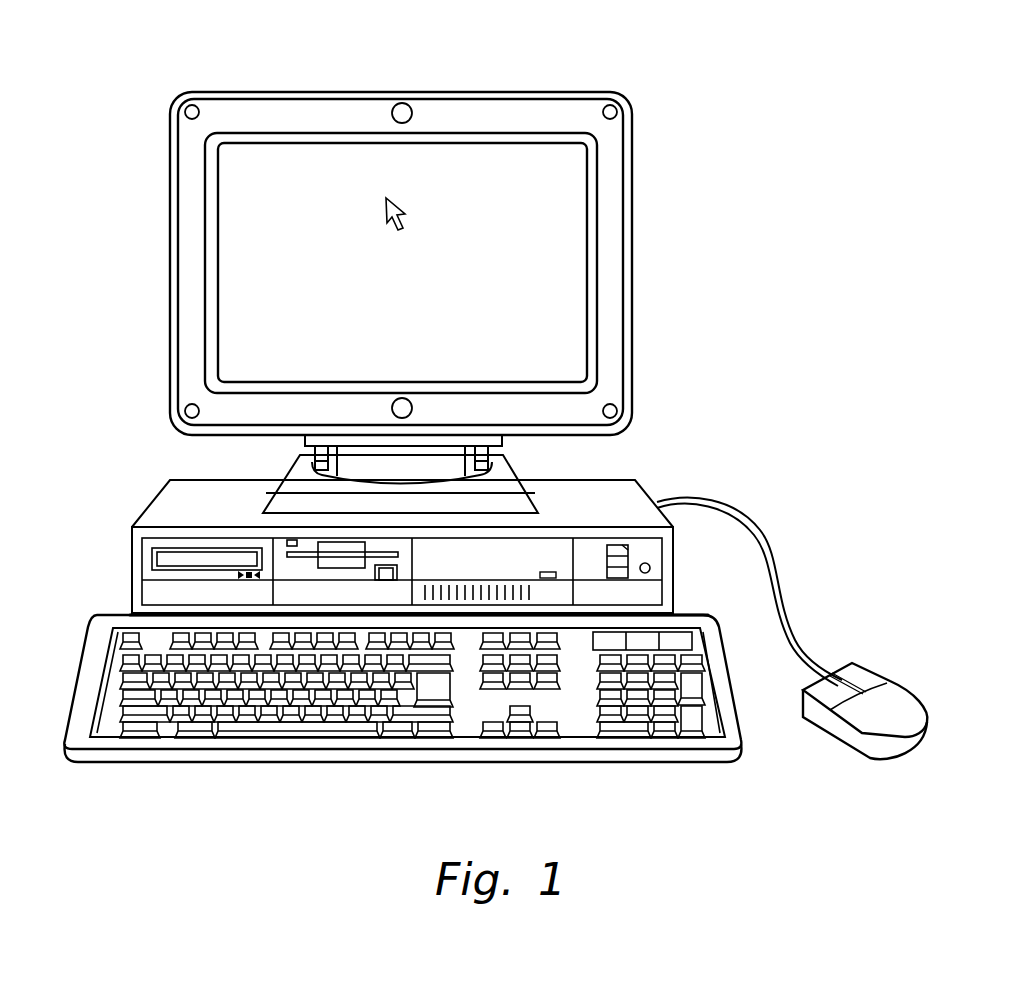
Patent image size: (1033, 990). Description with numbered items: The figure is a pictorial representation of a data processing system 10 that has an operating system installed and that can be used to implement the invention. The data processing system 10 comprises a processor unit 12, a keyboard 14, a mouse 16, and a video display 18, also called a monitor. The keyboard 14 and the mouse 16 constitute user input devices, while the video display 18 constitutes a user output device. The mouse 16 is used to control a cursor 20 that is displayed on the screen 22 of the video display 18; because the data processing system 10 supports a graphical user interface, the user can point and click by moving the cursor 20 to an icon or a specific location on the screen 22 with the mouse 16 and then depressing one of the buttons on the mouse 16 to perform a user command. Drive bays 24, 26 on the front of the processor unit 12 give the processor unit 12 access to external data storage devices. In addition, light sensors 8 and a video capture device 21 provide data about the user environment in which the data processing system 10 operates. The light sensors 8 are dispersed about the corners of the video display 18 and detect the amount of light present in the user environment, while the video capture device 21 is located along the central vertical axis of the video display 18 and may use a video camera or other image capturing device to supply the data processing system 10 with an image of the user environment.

The data processing system 10 is at (697, 68).
The light sensors 8 is at (186, 112).
The processor unit 12 is at (150, 500).
The keyboard 14 is at (242, 763).
The mouse 16 is at (858, 673).
The video display 18 is at (633, 262).
The cursor 20 is at (394, 199).
The video capture device 21 is at (402, 102).
The screen 22 is at (418, 304).
The disk drive 24 is at (405, 554).
The floppy disk drive 26 is at (150, 557).